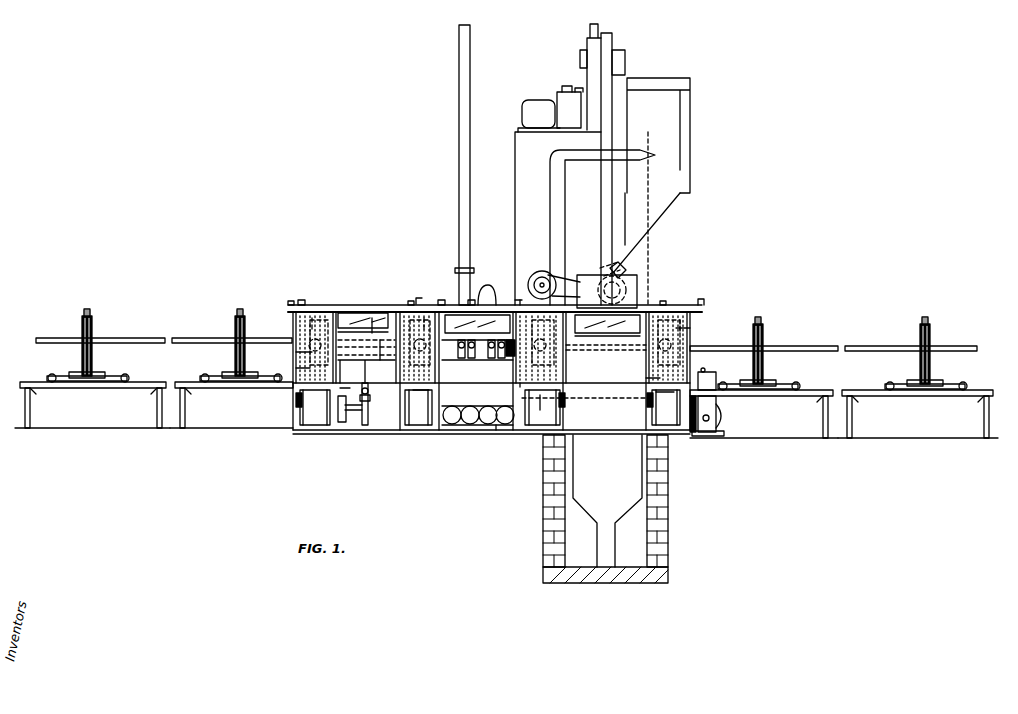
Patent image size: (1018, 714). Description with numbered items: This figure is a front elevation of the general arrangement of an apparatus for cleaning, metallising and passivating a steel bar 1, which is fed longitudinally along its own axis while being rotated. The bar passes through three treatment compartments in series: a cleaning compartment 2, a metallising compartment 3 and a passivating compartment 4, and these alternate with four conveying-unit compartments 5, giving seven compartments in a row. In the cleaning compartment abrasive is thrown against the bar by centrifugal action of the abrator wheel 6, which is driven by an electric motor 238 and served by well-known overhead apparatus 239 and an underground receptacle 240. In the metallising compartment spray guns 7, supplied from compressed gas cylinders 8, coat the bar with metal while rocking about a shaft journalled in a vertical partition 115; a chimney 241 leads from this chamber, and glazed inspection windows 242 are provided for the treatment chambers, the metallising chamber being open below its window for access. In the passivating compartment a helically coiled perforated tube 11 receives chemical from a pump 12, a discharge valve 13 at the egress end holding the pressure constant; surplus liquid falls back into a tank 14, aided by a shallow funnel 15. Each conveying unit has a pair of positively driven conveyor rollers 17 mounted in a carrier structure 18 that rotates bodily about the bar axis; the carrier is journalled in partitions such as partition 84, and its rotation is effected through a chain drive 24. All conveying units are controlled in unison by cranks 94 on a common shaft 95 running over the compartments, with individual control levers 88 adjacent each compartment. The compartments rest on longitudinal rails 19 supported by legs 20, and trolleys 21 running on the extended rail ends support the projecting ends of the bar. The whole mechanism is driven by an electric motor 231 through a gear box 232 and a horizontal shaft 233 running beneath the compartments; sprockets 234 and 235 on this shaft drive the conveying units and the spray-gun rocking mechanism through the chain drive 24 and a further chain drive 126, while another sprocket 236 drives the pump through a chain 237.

The steel bar 1 is at (63, 338).
The cleaning compartment 2 is at (608, 383).
The metallising compartment 3 is at (483, 382).
The passivating compartment 4 is at (372, 396).
The conveying unit compartments 5 is at (326, 380).
The abrator wheel 6 is at (637, 290).
The spray guns 7 is at (448, 348).
The compressed gas cylinders 8 is at (465, 425).
The tube 11 is at (384, 345).
The pump 12 is at (360, 425).
The discharge valve 13 is at (372, 425).
The tank 14 is at (355, 415).
The shallow funnel 15 is at (345, 318).
The conveyor rollers 17 is at (296, 352).
The carrier structure 18 is at (314, 318).
The longitudinal rails 19 is at (828, 390).
The legs 20 is at (26, 420).
The trolleys 21 is at (76, 362).
The chain drive 24 is at (298, 368).
The partition 84 is at (520, 305).
The control levers 88 is at (301, 300).
The cranks 94 is at (290, 301).
The common shaft 95 is at (372, 318).
The vertical partition 115 is at (515, 300).
The chain drive 126 is at (498, 426).
The electric motor 231 is at (718, 418).
The gear box 232 is at (716, 405).
The horizontal shaft 233 is at (428, 425).
The sprocket 234 is at (300, 398).
The sprocket 235 is at (522, 390).
The sprocket 236 is at (336, 420).
The chain 237 is at (340, 395).
The electric motor 238 is at (541, 271).
The overhead apparatus 239 is at (598, 198).
The underground receptacle 240 is at (620, 464).
The chimney 241 is at (459, 127).
The glazed inspection windows 242 is at (350, 315).